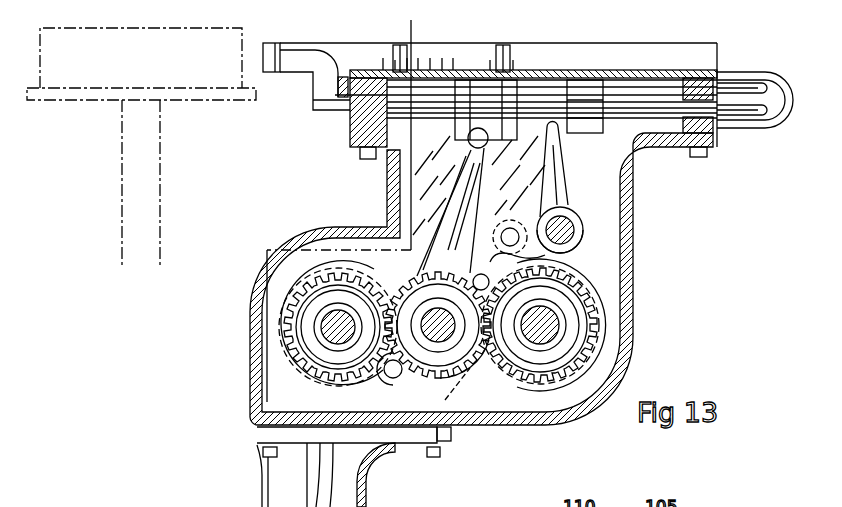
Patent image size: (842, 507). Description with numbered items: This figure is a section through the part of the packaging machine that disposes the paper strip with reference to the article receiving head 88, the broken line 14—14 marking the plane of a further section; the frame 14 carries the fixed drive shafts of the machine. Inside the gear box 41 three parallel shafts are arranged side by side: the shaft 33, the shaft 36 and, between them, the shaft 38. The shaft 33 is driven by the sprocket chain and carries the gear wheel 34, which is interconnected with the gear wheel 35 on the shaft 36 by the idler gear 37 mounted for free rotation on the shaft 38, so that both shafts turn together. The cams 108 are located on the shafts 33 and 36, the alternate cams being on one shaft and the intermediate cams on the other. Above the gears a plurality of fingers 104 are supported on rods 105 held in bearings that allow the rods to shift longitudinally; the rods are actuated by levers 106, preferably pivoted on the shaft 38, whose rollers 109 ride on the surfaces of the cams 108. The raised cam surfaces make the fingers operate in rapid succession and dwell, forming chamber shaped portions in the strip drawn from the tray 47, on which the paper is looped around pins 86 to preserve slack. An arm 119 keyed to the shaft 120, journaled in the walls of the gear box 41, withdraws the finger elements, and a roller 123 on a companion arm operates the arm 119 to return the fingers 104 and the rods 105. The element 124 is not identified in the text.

The frame 14 is at (406, 20).
The shaft 33 is at (340, 343).
The gear wheel 34 is at (335, 337).
The gear wheel 35 is at (582, 345).
The shaft 36 is at (547, 323).
The idler gear 37 is at (450, 372).
The shaft 38 is at (438, 332).
The gear box 41 is at (632, 292).
The tray 47 is at (718, 55).
The pins 86 is at (449, 47).
The head 88 is at (228, 43).
The fingers 104 is at (294, 58).
The rods 105 is at (395, 100).
The levers 106 is at (453, 217).
The cams 108 is at (280, 332).
The rollers 109 is at (550, 253).
The arm 119 is at (560, 188).
The shaft 120 is at (573, 228).
The roller 123 is at (560, 185).
The collar 124 is at (578, 110).